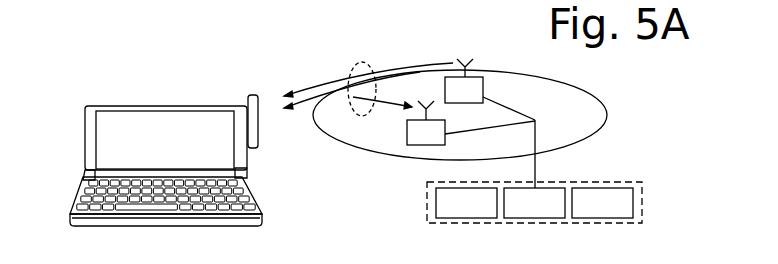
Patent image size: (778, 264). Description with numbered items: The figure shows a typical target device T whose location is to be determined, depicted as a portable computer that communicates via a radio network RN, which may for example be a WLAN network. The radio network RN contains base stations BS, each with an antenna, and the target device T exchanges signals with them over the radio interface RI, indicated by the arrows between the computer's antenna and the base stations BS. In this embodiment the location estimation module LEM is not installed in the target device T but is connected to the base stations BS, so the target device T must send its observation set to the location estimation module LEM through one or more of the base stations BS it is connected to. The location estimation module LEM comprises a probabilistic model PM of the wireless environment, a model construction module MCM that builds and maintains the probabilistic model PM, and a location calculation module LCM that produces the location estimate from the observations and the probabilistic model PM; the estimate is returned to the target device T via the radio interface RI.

The target device T is at (85, 127).
The radio interface RI is at (362, 62).
The base station BS is at (471, 123).
The radio network RN is at (580, 143).
The location estimation module LEM is at (427, 199).
The model construction module MCM is at (466, 203).
The probabilistic model PM is at (534, 203).
The location calculation module LCM is at (602, 203).